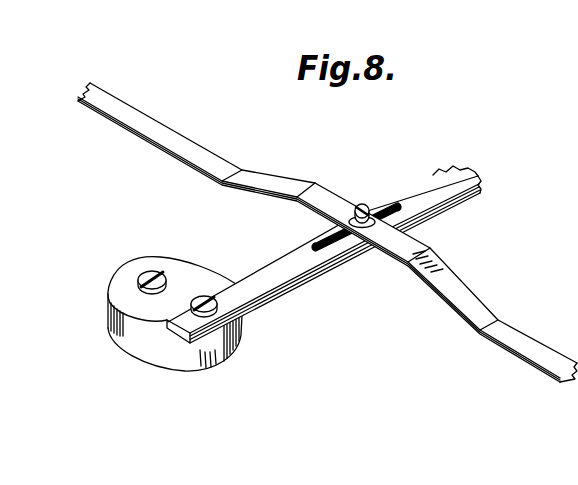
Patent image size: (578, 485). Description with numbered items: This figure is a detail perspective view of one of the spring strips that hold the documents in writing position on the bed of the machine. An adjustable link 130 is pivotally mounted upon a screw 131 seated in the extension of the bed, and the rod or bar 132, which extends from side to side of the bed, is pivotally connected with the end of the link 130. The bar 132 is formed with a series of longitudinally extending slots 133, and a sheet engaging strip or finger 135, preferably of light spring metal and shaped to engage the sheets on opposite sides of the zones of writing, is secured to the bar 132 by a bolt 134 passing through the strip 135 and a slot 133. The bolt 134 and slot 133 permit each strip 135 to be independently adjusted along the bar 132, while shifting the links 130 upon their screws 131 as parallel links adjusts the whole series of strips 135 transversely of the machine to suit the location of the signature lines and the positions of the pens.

The adjustable link 130 is at (192, 285).
The screw 131 is at (158, 276).
The rod or bar 132 is at (324, 236).
The longitudinally extending slot 133 is at (330, 248).
The bolt 134 is at (368, 205).
The sheet engaging strip or finger 135 is at (187, 145).